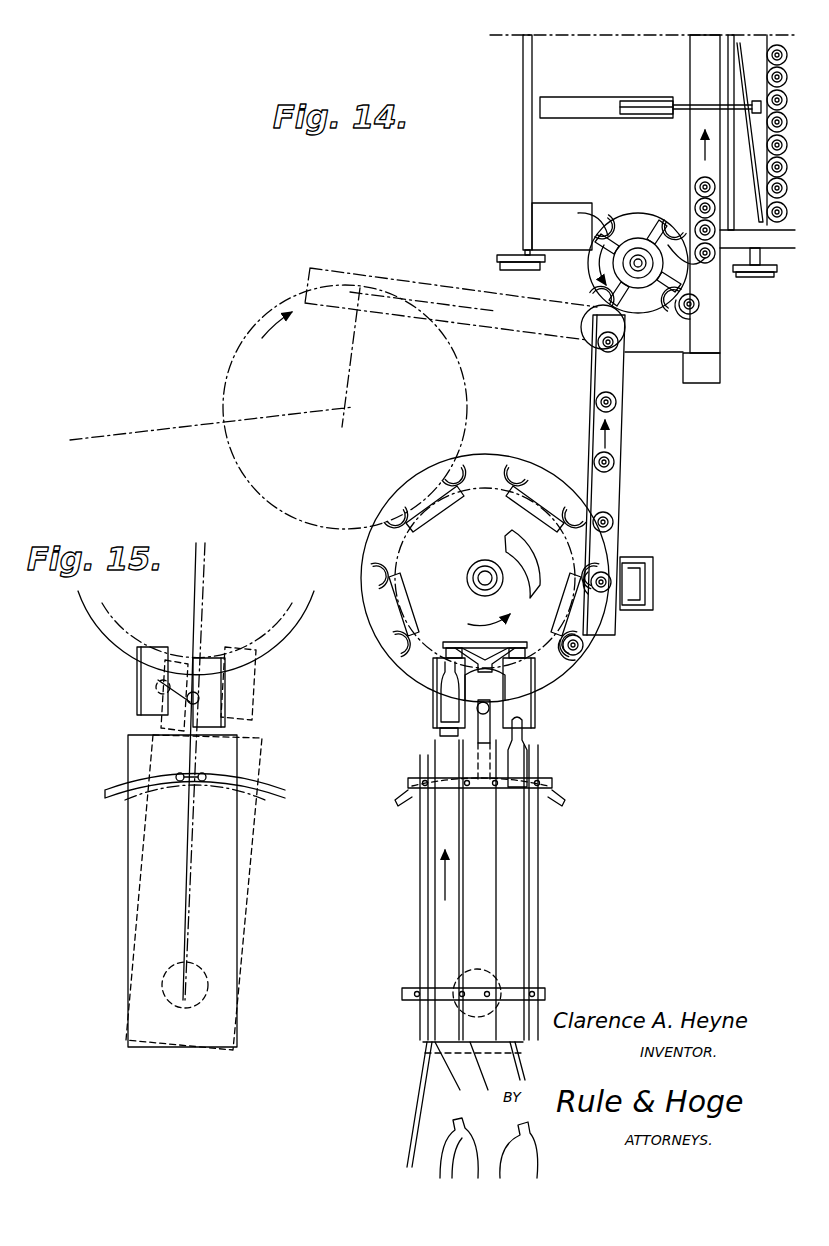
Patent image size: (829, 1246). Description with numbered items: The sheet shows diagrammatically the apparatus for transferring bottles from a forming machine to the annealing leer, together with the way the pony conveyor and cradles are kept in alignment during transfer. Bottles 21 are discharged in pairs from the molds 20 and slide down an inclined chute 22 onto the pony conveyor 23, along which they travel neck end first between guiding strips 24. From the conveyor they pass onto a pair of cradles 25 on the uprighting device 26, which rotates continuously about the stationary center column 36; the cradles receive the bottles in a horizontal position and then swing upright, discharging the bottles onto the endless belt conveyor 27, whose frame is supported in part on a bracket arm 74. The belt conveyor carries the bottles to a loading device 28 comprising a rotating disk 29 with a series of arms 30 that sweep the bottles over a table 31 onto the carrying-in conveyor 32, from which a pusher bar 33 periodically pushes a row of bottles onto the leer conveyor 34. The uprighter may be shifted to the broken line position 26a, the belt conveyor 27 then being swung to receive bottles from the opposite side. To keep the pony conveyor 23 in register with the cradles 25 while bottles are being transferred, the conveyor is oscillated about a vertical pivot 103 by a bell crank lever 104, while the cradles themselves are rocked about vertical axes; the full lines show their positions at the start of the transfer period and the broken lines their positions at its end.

In FIG. 14, the molds 20 is at (437, 1145).
In FIG. 14, the bottles 21 is at (440, 716).
In FIG. 14, the inclined chute 22 is at (440, 1072).
In FIG. 14, the pony conveyor 23 is at (515, 905).
In FIG. 15, the pony conveyor 23 is at (135, 843).
In FIG. 14, the guiding strips 24 is at (500, 843).
In FIG. 14, the cradles 25 is at (520, 700).
In FIG. 15, the cradles 25 is at (137, 694).
In FIG. 14, the uprighting device 26 is at (366, 552).
In FIG. 14, the broken line position of uprighter 26a is at (230, 364).
In FIG. 14, the endless belt conveyor 27 is at (610, 492).
In FIG. 14, the loading device 28 is at (592, 283).
In FIG. 14, the rotating disk 29 is at (640, 224).
In FIG. 14, the arms 30 is at (681, 312).
In FIG. 14, the table 31 is at (668, 357).
In FIG. 14, the carrying-in conveyor 32 is at (710, 328).
In FIG. 14, the pusher bar 33 is at (764, 70).
In FIG. 14, the leer conveyor 34 is at (778, 233).
In FIG. 14, the center column 36 is at (480, 578).
In FIG. 14, the bracket arm 74 is at (655, 590).
In FIG. 14, the vertical pivot 103 is at (477, 968).
In FIG. 15, the vertical pivot 103 is at (171, 1000).
In FIG. 14, the bell crank lever 104 is at (485, 722).